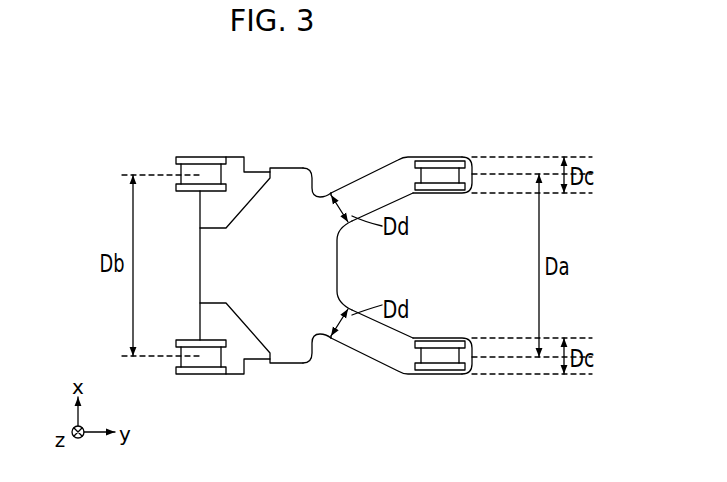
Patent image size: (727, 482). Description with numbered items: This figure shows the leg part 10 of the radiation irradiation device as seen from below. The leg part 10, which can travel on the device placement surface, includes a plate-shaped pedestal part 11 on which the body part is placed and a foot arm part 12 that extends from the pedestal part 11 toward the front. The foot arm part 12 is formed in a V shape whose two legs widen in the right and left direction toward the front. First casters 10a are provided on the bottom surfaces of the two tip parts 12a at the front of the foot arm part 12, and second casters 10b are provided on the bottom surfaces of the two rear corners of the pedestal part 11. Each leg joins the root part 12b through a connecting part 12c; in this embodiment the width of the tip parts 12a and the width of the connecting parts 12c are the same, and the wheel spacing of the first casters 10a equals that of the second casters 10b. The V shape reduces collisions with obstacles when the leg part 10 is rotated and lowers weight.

The leg part 10 is at (354, 251).
The first caster 10a is at (440, 172).
The second caster 10b is at (200, 172).
The pedestal part 11 is at (258, 367).
The foot arm part 12 is at (353, 219).
The tip part 12a is at (457, 158).
The root part 12b is at (325, 263).
The connecting part 12c is at (331, 193).